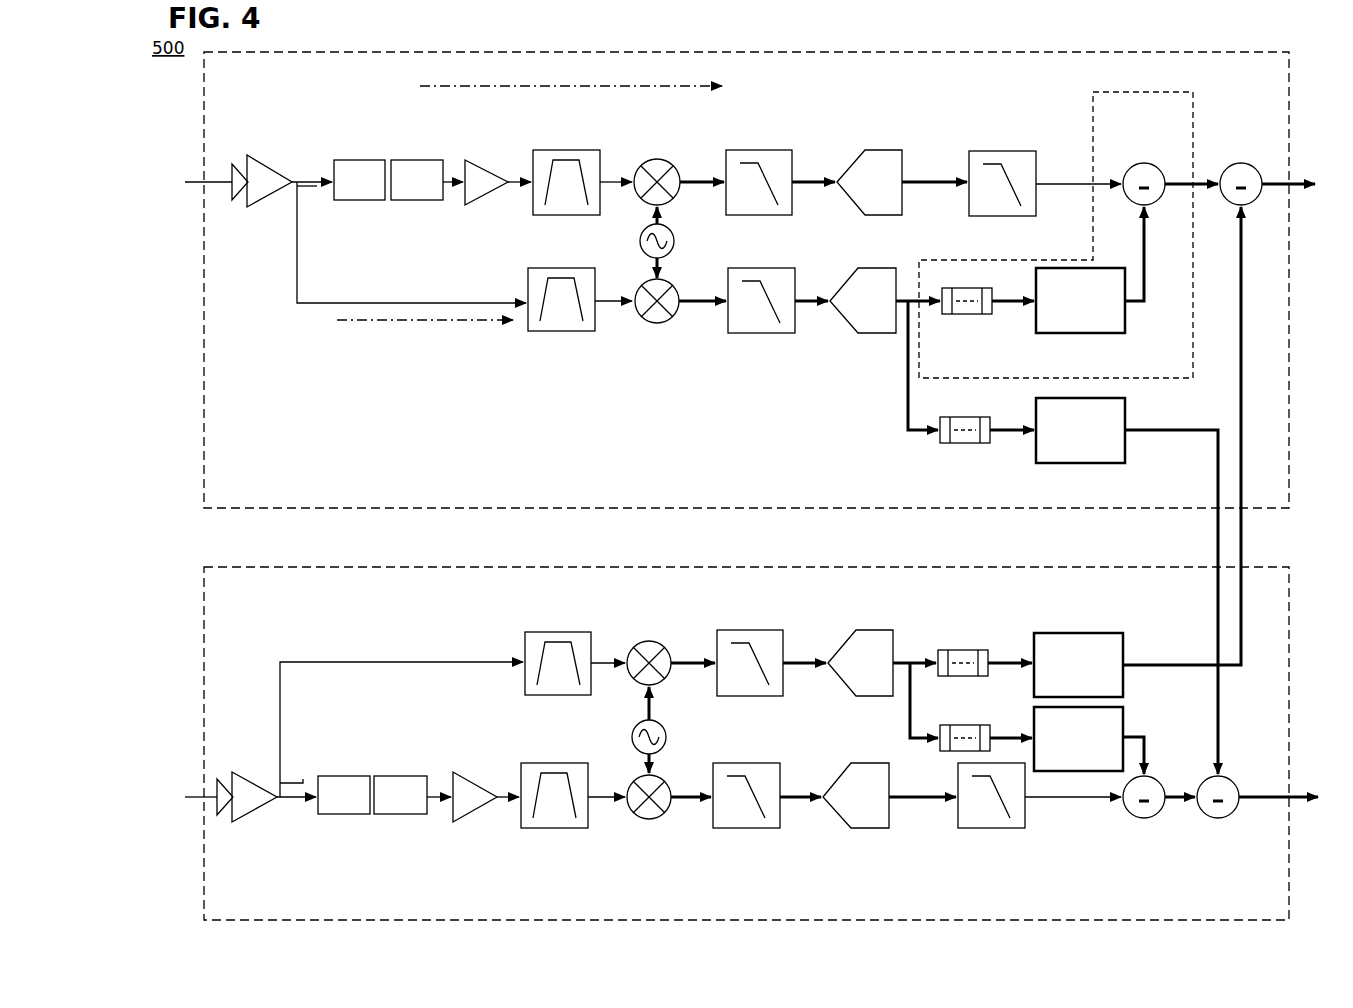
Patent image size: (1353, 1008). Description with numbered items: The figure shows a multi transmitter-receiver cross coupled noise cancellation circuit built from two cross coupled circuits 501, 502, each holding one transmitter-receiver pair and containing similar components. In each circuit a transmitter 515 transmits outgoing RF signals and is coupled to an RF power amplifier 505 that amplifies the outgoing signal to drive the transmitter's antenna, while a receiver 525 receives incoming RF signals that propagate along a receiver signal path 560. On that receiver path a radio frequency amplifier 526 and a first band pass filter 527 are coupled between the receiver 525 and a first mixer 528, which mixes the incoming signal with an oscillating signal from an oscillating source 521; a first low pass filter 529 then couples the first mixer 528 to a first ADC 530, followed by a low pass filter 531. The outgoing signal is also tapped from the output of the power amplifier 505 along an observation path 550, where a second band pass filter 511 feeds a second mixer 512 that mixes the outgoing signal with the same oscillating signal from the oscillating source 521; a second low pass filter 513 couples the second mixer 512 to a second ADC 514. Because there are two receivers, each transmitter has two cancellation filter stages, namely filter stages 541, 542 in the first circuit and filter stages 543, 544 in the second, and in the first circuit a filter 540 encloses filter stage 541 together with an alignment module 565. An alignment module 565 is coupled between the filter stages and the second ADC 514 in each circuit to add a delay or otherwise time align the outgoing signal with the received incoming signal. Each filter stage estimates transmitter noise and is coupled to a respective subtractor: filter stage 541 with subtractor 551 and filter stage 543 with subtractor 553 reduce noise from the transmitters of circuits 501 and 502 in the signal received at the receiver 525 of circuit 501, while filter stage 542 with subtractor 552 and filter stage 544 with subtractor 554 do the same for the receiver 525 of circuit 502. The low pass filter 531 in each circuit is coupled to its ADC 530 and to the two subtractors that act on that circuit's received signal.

The cross coupled circuit 501 is at (746, 280).
The cross coupled circuit 502 is at (746, 743).
The RF power amplifier 505 is at (258, 206).
The second band pass filter 511 is at (560, 325).
The second mixer 512 is at (660, 325).
The second low pass filter 513 is at (750, 335).
The second ADC 514 is at (866, 325).
The transmitter 515 is at (346, 200).
The oscillating source 521 is at (670, 250).
The receiver 525 is at (411, 160).
The radio frequency amplifier 526 is at (483, 178).
The first band pass filter 527 is at (590, 160).
The first mixer 528 is at (661, 165).
The first low pass filter 529 is at (780, 160).
The first ADC 530 is at (888, 160).
The low pass filter 531 is at (1022, 160).
The filter 540 is at (1056, 235).
The cancellation filter stage 541 is at (1080, 300).
The cancellation filter stage 542 is at (1080, 430).
The cancellation filter stage 543 is at (1078, 665).
The cancellation filter stage 544 is at (1078, 739).
The observation path 550 is at (425, 348).
The subtractor 551 is at (1150, 170).
The subtractor 552 is at (1210, 816).
The subtractor 553 is at (1248, 170).
The subtractor 554 is at (1138, 816).
The receiver signal path 560 is at (571, 74).
The alignment module 565 is at (974, 316).